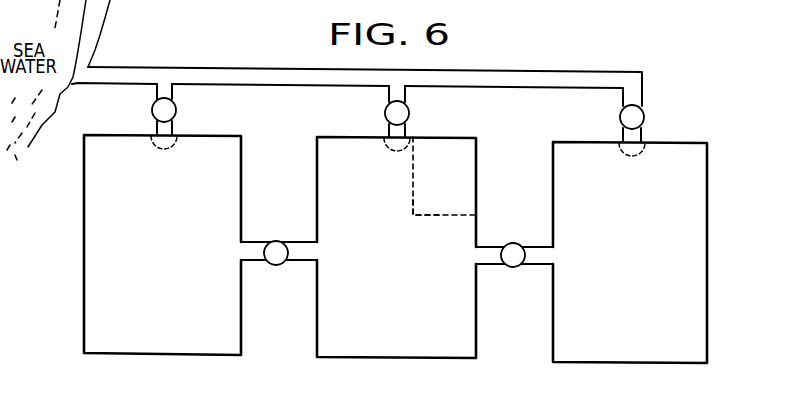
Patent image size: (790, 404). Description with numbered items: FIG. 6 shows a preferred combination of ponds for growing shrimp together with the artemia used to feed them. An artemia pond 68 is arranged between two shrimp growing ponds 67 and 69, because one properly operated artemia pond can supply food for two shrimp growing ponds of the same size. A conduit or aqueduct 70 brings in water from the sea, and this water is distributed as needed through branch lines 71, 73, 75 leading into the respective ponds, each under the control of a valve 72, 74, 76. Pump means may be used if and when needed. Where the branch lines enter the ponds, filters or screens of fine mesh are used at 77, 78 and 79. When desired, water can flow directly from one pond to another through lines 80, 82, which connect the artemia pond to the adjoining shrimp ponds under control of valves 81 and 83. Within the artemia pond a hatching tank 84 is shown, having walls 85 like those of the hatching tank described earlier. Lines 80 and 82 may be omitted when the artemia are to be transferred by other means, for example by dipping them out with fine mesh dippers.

The shrimp growing pond 67 is at (83, 167).
The artemia pond 68 is at (317, 173).
The shrimp growing pond 69 is at (553, 175).
The conduit or aqueduct 70 is at (113, 67).
The branch line 71 is at (173, 88).
The valve 72 is at (152, 110).
The branch line 73 is at (406, 95).
The valve 74 is at (385, 113).
The branch line 75 is at (642, 95).
The valve 76 is at (620, 117).
The filter or screen 77 is at (157, 143).
The filter or screen 78 is at (388, 145).
The filter or screen 79 is at (622, 150).
The line 80 is at (252, 241).
The valve 81 is at (274, 265).
The line 82 is at (487, 246).
The valve 83 is at (512, 266).
The hatching tank 84 is at (448, 156).
The walls 85 is at (447, 217).